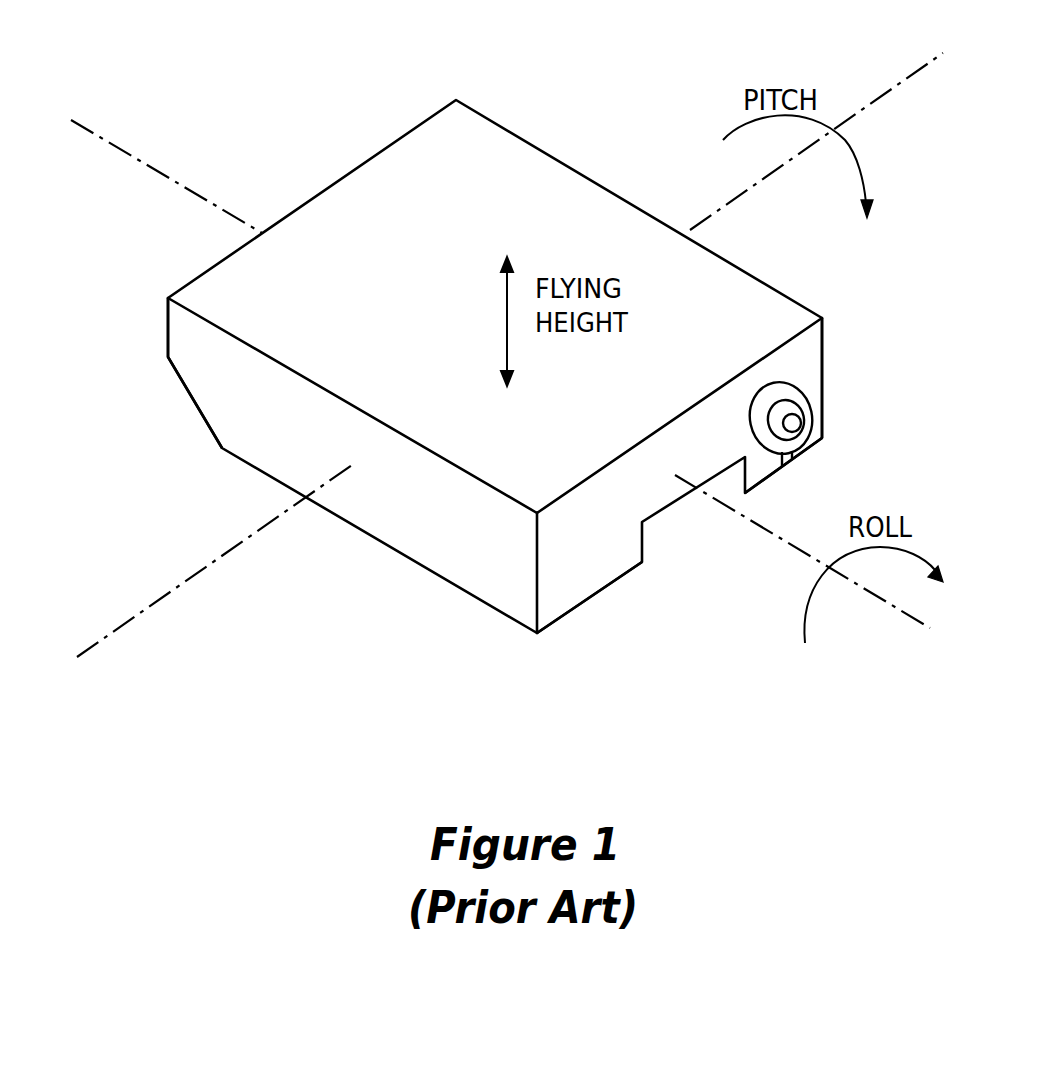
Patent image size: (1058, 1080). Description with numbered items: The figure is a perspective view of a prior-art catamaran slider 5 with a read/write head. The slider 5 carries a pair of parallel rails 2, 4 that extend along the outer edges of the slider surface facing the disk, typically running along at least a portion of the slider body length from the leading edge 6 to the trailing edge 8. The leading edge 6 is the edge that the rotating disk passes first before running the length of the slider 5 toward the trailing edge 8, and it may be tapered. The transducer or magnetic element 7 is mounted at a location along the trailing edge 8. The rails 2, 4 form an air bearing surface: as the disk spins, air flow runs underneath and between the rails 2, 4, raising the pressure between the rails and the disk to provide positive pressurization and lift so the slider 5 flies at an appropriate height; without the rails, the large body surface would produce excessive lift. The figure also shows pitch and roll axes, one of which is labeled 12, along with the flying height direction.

The catamaran slider 5 is at (543, 98).
The leading edge 6 is at (168, 327).
The trailing edge 8 is at (823, 321).
The transducer or magnetic element 7 is at (814, 398).
The rail 2 is at (772, 472).
The rail 4 is at (578, 608).
The roll axis 12 is at (88, 128).